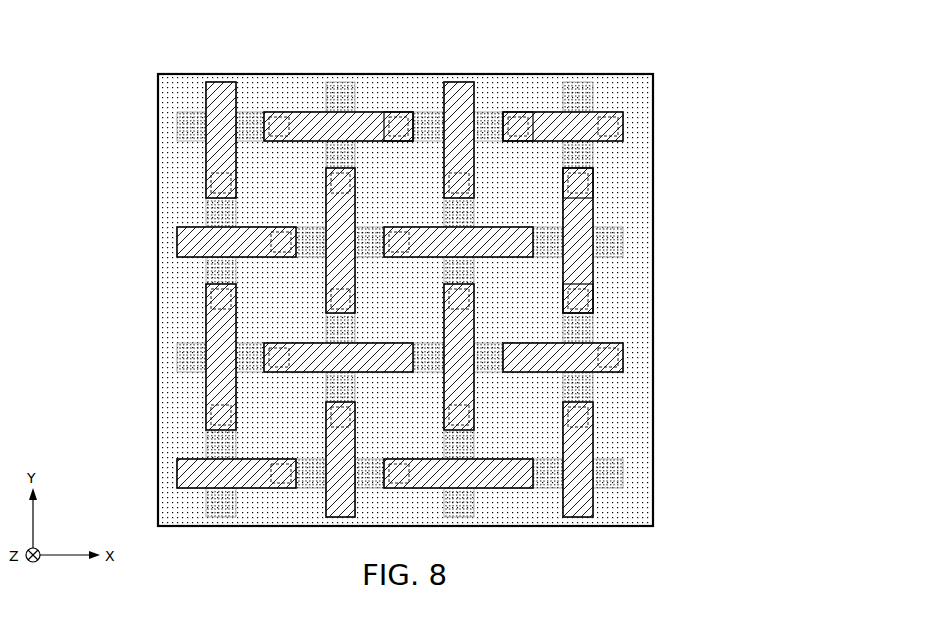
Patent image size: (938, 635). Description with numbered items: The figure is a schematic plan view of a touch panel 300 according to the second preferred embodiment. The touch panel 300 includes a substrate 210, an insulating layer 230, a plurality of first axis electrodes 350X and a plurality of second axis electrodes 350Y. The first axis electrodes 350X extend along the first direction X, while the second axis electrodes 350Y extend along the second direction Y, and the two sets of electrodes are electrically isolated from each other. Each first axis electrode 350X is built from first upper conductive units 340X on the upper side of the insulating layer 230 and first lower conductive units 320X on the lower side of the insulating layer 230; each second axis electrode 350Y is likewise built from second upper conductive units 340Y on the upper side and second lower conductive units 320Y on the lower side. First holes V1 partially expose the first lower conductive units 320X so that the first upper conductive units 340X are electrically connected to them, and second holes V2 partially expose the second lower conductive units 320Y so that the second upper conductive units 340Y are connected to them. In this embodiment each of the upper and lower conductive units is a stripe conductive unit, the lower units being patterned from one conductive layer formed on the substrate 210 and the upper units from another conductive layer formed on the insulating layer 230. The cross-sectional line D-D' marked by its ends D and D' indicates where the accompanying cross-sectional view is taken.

The touch panel 300 is at (668, 48).
The substrate 210 is at (653, 395).
The insulating layer 230 is at (607, 431).
The second axis electrode 350Y is at (238, 55).
The first axis electrode 350X is at (150, 110).
The second lower conductive unit 320Y is at (583, 93).
The first lower conductive unit 320X is at (487, 137).
The second upper conductive unit 340Y is at (477, 163).
The first upper conductive unit 340X is at (618, 133).
The first hole V1 is at (398, 112).
The second hole V2 is at (597, 183).
The cross-sectional line D-D' D is at (246, 269).
The cross-sectional line D- D' is at (435, 439).